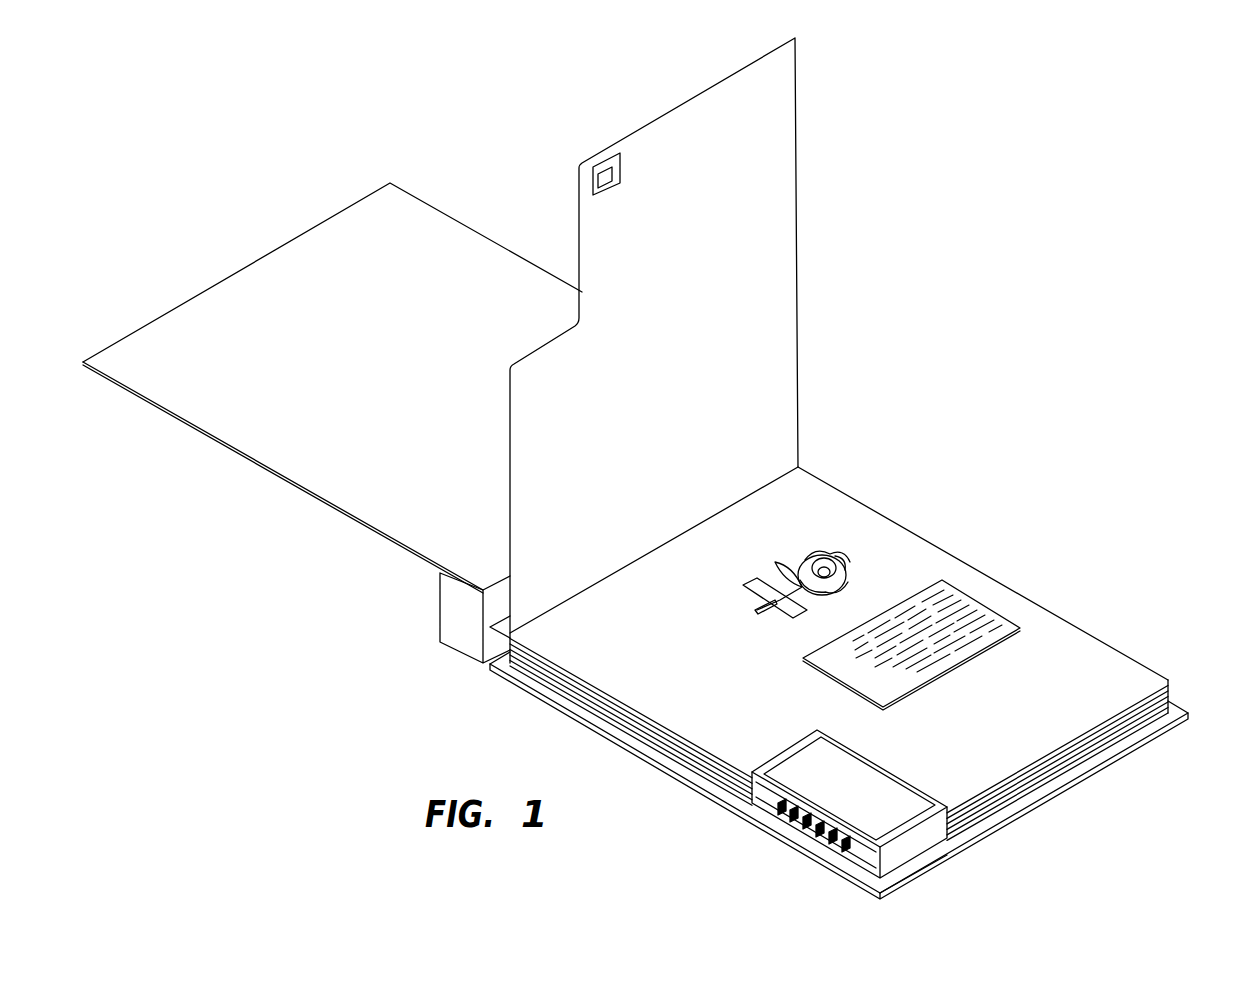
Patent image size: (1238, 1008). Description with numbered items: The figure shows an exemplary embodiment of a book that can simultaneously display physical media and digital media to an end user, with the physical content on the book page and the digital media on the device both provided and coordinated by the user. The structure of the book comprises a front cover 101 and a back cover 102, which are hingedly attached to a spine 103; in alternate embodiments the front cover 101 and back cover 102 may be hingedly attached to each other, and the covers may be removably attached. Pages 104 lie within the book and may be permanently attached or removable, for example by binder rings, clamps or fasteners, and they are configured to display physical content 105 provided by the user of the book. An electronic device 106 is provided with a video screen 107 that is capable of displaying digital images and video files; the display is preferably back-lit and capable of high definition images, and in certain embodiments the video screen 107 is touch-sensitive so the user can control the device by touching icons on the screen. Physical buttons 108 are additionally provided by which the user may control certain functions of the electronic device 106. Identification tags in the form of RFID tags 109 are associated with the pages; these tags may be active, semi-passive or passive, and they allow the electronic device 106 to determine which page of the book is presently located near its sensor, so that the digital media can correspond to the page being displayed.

The front cover 101 is at (185, 302).
The back cover 102 is at (1188, 713).
The spine 103 is at (438, 613).
The pages 104 is at (798, 139).
The physical content 105 is at (853, 573).
The electronic device 106 is at (947, 849).
The video screen 107 is at (873, 772).
The physical buttons 108 is at (810, 833).
The RFID tags 109 is at (603, 165).